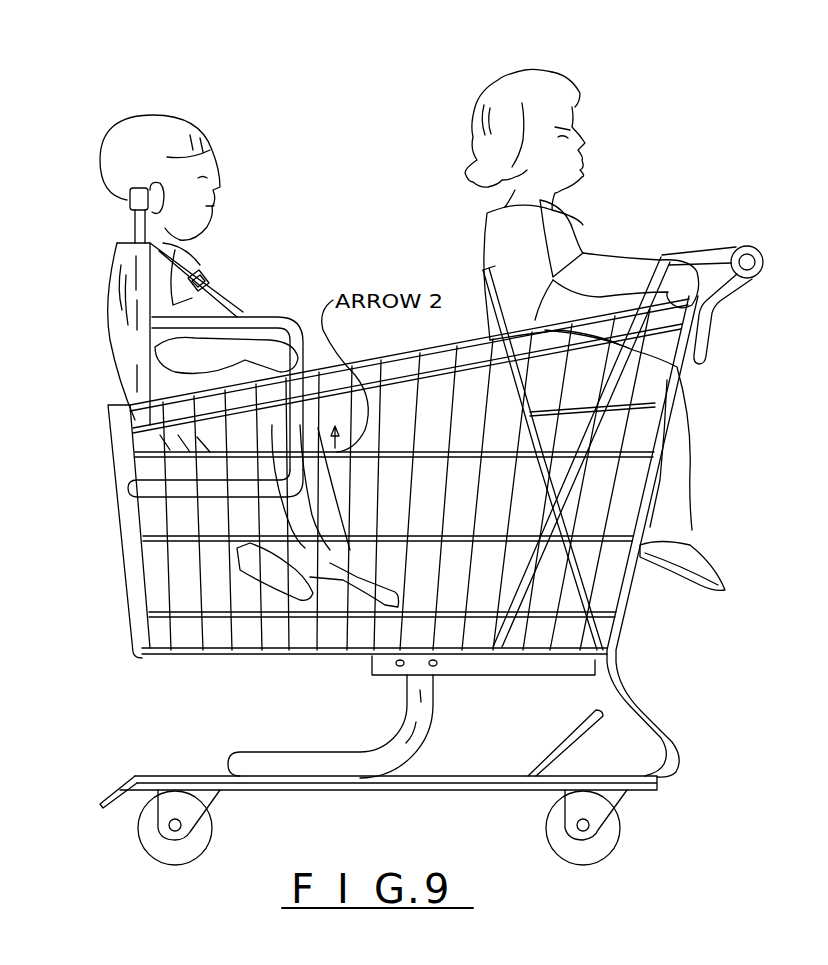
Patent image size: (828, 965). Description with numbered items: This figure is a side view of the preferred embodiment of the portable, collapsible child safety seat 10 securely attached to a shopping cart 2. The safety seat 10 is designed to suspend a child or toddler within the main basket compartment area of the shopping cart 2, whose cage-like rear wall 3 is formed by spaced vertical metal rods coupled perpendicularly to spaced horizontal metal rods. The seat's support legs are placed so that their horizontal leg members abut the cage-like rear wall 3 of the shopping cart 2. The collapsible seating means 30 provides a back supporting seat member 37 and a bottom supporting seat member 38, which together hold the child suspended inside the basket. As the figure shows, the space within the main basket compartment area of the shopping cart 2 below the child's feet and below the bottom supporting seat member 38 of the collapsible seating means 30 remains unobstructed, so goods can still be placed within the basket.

The shopping cart 2 is at (378, 106).
The cage-like rear wall 3 is at (137, 625).
The portable, collapsible child safety seat 10 is at (82, 170).
The collapsible seating means 30 is at (113, 350).
The back supporting seat member 37 is at (107, 277).
The bottom supporting seat member 38 is at (210, 468).